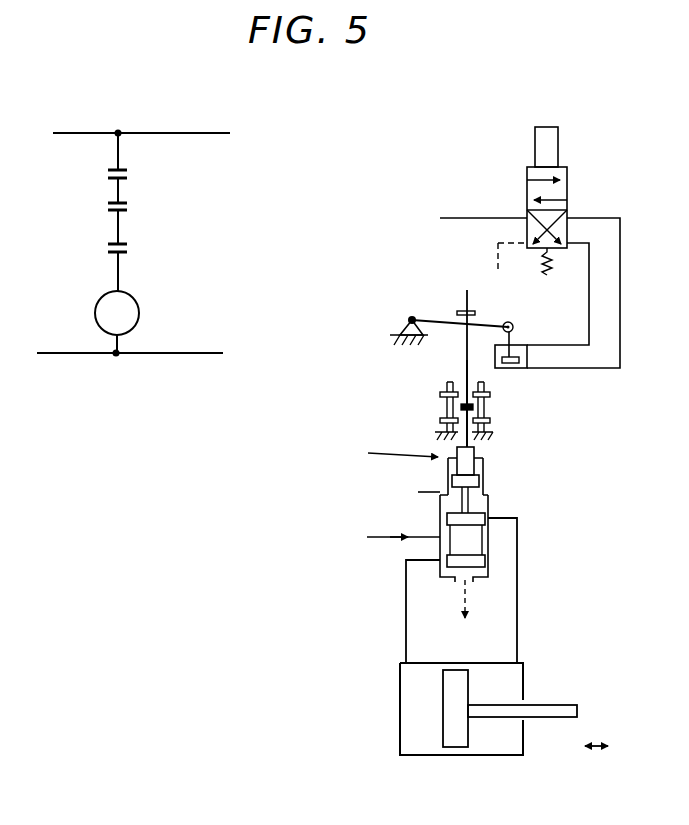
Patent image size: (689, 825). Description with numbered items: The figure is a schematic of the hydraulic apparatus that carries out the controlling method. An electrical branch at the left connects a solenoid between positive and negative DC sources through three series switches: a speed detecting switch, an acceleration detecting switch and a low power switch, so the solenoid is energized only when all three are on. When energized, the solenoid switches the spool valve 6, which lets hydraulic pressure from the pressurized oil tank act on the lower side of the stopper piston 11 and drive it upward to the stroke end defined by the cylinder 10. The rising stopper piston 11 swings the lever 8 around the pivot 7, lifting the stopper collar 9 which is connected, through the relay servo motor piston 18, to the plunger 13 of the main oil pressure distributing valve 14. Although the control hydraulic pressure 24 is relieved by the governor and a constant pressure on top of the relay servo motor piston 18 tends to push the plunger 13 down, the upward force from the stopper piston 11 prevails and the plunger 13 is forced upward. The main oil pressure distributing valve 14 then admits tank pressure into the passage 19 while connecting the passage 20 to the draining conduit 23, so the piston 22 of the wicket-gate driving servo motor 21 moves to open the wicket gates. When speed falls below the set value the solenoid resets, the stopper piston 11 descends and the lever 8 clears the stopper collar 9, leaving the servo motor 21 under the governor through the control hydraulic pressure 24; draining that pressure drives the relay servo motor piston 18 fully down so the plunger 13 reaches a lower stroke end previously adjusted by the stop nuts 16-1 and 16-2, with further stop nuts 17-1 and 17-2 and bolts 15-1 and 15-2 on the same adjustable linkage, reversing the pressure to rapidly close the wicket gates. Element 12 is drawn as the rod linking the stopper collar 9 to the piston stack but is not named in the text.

The spool valve 6 is at (567, 190).
The pivot 7 is at (412, 317).
The lever 8 is at (441, 320).
The stopper collar 9 is at (467, 302).
The cylinder 10 is at (514, 369).
The stopper piston 11 is at (513, 327).
The rod 12 is at (466, 356).
The plunger 13 is at (440, 504).
The main oil pressure distributing valve 14 is at (488, 512).
The bolt 15-1 is at (486, 418).
The bolt 15-2 is at (447, 408).
The stop nut 16-1 is at (492, 432).
The stop nut 16-2 is at (440, 423).
The stop nut 17-1 is at (490, 394).
The stop nut 17-2 is at (440, 394).
The relay servo motor piston 18 is at (457, 464).
The passage 19 is at (517, 617).
The passage 20 is at (406, 623).
The wicket-gate driving servo motor 21 is at (355, 718).
The piston 22 is at (553, 705).
The draining conduit 23 is at (460, 593).
The control hydraulic pressure 24 is at (431, 492).